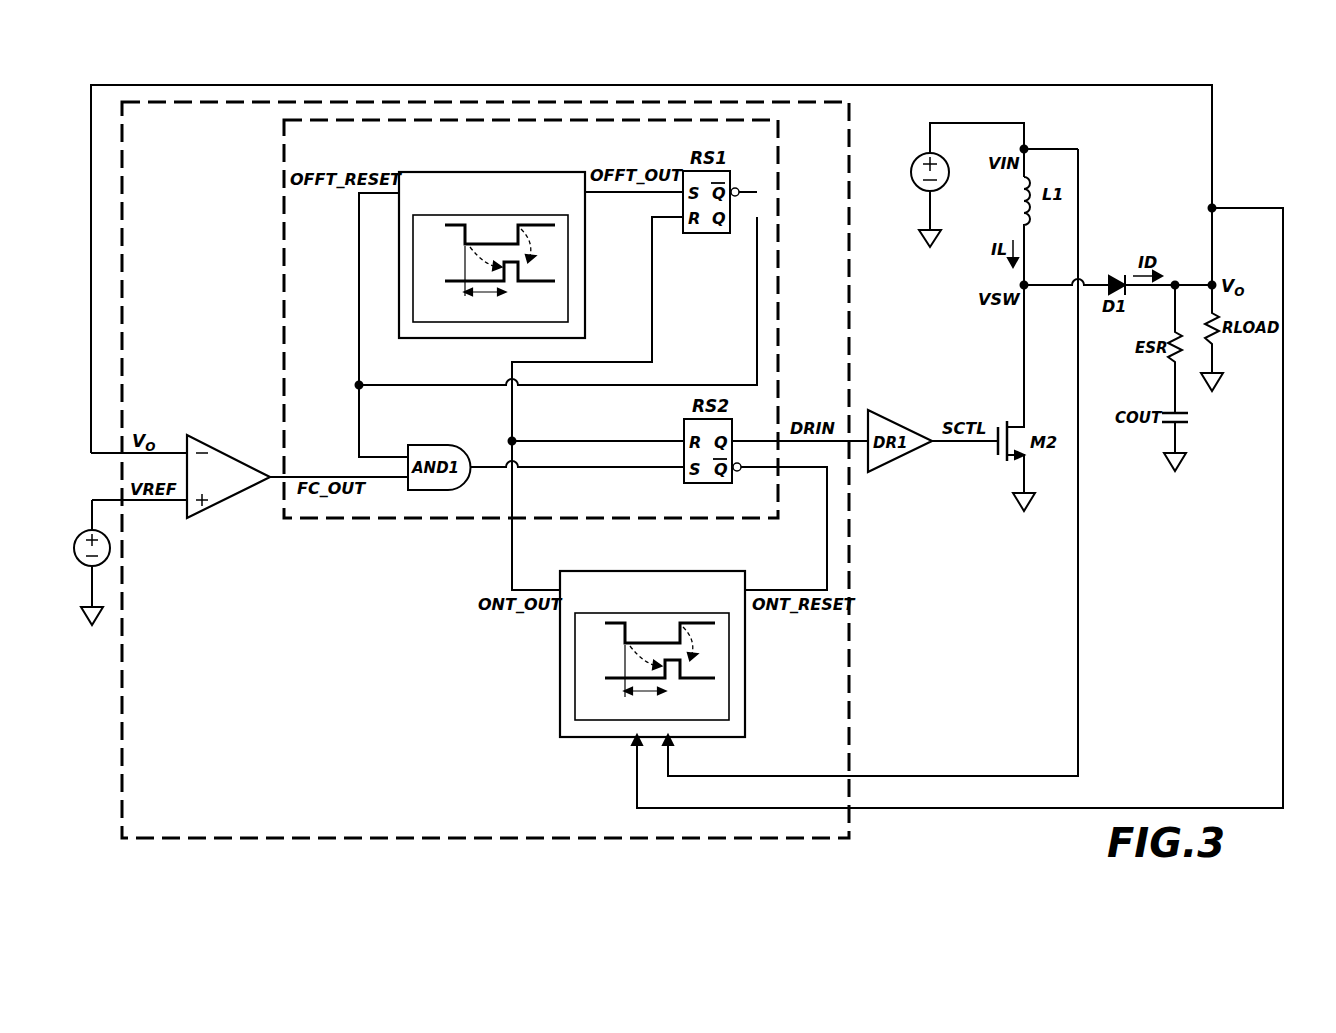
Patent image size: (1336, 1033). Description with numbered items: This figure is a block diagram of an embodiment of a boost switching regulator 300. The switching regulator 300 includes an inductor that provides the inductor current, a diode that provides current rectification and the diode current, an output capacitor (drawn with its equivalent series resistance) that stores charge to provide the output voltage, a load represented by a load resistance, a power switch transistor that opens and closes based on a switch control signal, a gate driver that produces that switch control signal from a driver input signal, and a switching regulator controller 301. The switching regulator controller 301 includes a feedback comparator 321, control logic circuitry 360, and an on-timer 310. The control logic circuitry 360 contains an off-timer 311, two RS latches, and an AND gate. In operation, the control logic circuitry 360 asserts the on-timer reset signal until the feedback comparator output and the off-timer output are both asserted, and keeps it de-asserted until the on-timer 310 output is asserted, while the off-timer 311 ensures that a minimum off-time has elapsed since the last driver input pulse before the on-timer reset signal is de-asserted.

The switching regulator 300 is at (1236, 106).
The switching regulator controller 301 is at (164, 137).
The control logic circuitry 360 is at (327, 152).
The off-timer 311 is at (443, 172).
The on-timer 310 is at (604, 571).
The feedback comparator 321 is at (215, 503).